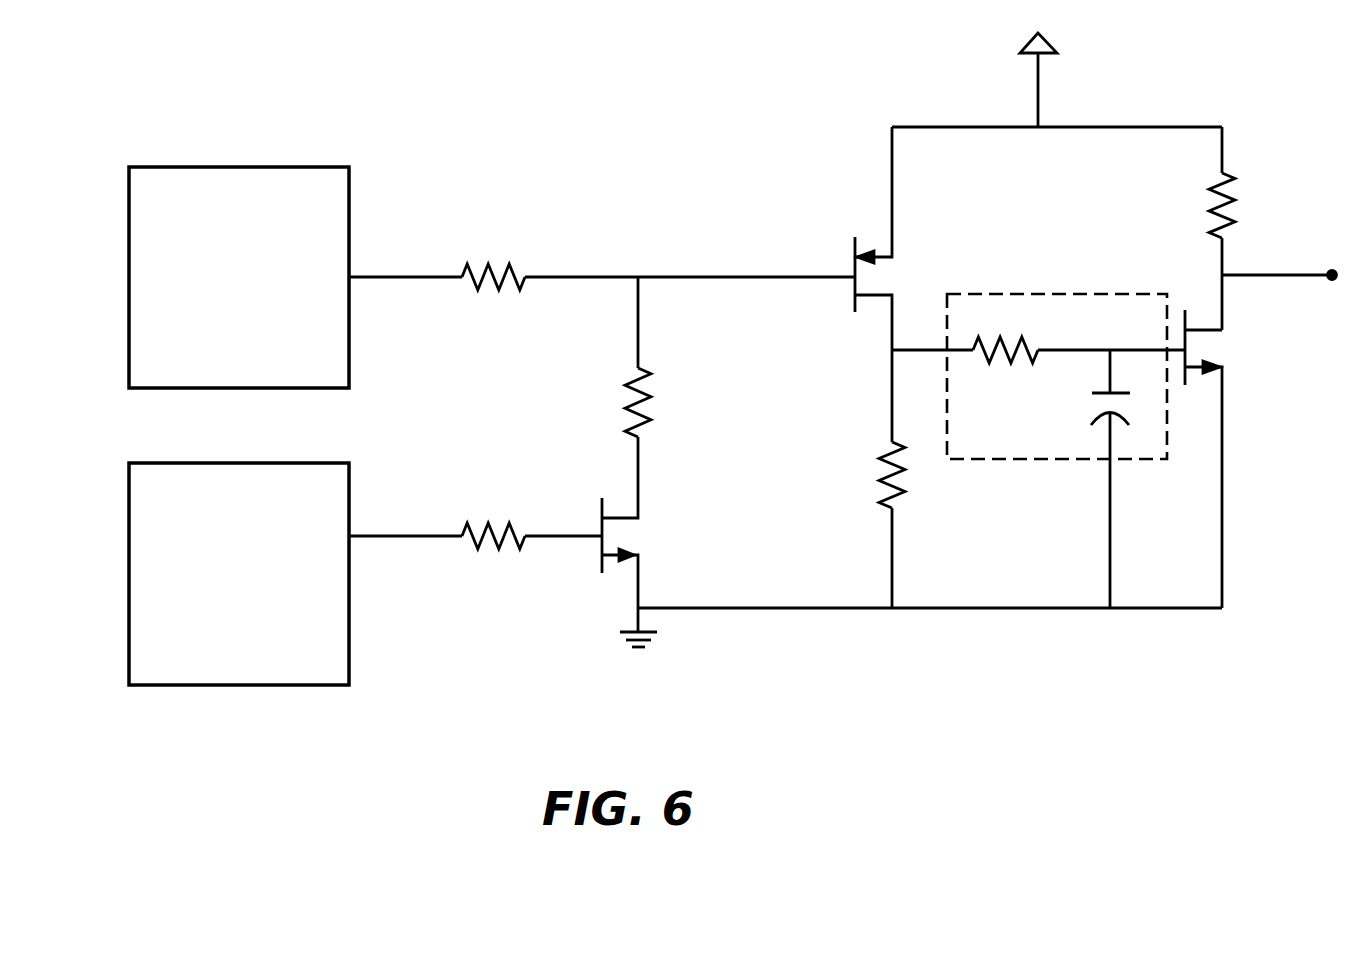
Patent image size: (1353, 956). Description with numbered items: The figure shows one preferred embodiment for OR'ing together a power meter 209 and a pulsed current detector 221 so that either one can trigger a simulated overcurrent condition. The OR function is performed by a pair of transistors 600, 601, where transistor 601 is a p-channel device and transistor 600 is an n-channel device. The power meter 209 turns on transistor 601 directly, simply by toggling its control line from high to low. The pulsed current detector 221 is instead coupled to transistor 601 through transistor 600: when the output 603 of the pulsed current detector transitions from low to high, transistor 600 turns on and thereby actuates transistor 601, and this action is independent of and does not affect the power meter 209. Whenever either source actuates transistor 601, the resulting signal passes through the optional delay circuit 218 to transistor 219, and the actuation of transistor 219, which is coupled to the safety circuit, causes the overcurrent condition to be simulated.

The power meter 209 is at (328, 332).
The pulsed current detector 221 is at (330, 610).
The output 603 is at (385, 535).
The transistor 600 is at (603, 525).
The transistor 601 is at (858, 265).
The delay circuit 218 is at (1000, 294).
The transistor 219 is at (1187, 358).